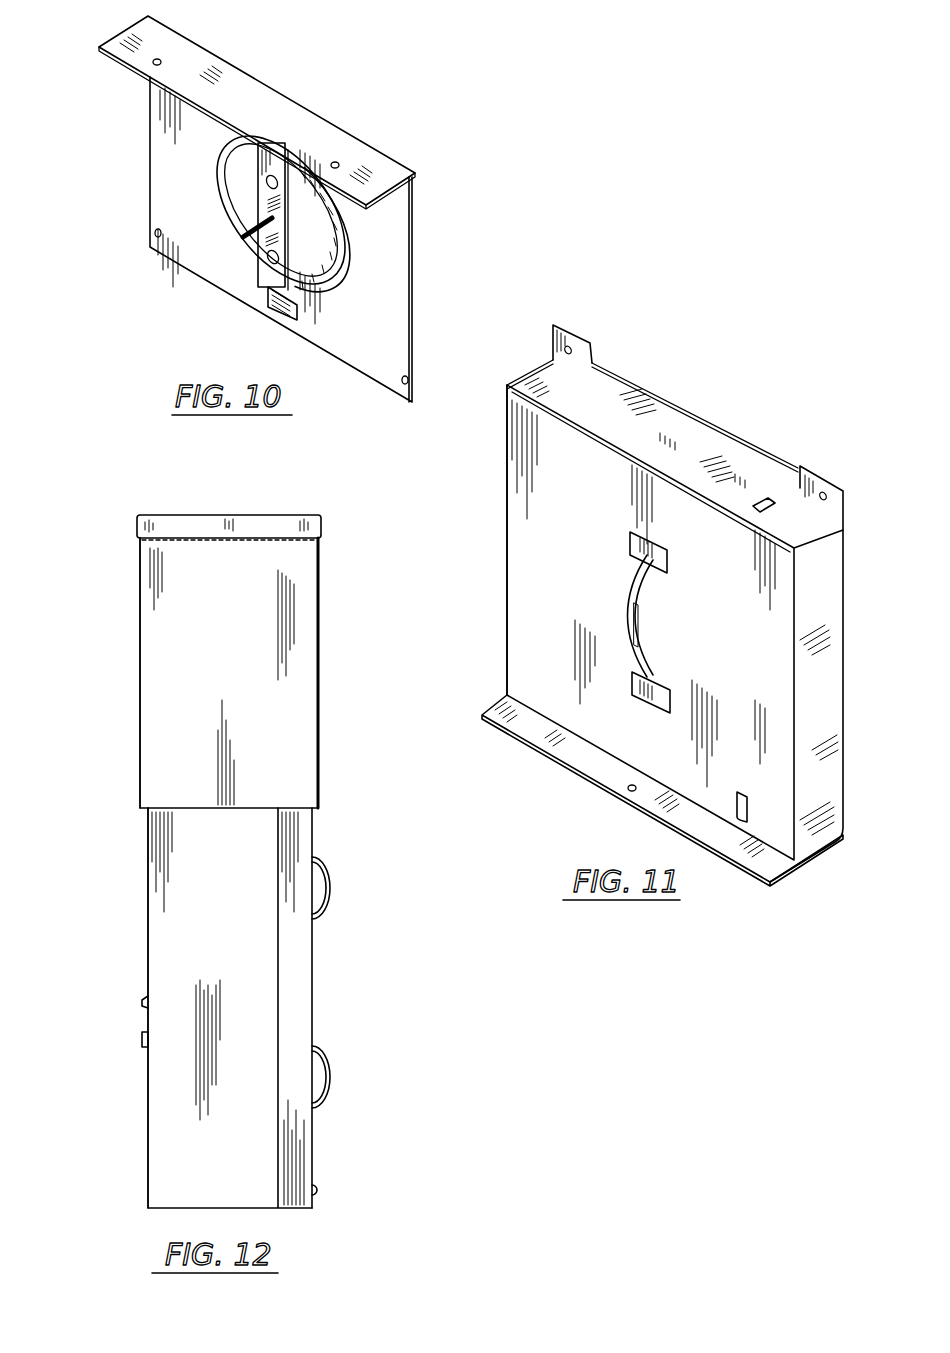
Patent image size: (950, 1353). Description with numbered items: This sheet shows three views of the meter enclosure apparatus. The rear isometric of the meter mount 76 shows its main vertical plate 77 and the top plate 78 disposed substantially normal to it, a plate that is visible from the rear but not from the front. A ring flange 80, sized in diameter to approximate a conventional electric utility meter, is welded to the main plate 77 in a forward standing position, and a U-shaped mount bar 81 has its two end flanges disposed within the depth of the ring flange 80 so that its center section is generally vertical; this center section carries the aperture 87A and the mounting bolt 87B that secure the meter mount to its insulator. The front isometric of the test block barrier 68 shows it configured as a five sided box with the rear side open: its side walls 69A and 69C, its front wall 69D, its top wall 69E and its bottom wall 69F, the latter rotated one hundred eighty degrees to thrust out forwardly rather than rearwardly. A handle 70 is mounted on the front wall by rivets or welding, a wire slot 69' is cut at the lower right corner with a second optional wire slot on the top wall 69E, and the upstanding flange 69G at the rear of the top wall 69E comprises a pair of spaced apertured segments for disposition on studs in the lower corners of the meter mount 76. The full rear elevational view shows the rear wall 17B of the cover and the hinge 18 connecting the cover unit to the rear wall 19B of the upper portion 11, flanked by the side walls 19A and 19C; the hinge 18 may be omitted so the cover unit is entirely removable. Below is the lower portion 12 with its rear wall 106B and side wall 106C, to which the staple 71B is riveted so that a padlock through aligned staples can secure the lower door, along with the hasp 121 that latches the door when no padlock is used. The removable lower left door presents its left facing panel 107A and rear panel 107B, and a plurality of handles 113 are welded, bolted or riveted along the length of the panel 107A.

In FIG. 12, the upper portion 11 is at (337, 791).
In FIG. 12, the lower enclosure 12 is at (364, 1048).
In FIG. 12, the rear wall of cover 17B is at (205, 525).
In FIG. 12, the hinge 18 is at (280, 542).
In FIG. 12, the side wall 19A is at (321, 671).
In FIG. 12, the rear wall of upper portion 19B is at (255, 688).
In FIG. 12, the side wall 19C is at (138, 680).
In FIG. 11, the test block barrier 68 is at (730, 353).
In FIG. 11, the side wall of test block barrier 69A is at (507, 504).
In FIG. 11, the side wall of test block barrier 69C is at (817, 662).
In FIG. 11, the front wall of test block barrier 69D is at (740, 635).
In FIG. 11, the top wall of test block barrier 69E is at (678, 447).
In FIG. 11, the bottom wall of test block barrier 69F is at (567, 748).
In FIG. 11, the upstanding flange 69G is at (618, 390).
In FIG. 11, the wire slot 69' is at (813, 619).
In FIG. 11, the handle 70 is at (625, 602).
In FIG. 12, the staple 71B is at (142, 1043).
In FIG. 10, the meter mount 76 is at (384, 339).
In FIG. 10, the main plate 77 is at (196, 227).
In FIG. 10, the top plate 78 is at (262, 113).
In FIG. 10, the ring flange 80 is at (232, 180).
In FIG. 10, the mount bar 81 is at (272, 292).
In FIG. 10, the aperture 87A is at (275, 219).
In FIG. 10, the bolt 87B is at (262, 258).
In FIG. 12, the rear wall of lower portion 106B is at (230, 1008).
In FIG. 12, the side wall 106C is at (148, 1100).
In FIG. 12, the left facing panel 107A is at (314, 977).
In FIG. 12, the rear panel 107B is at (300, 1002).
In FIG. 12, the handle 113 is at (329, 895).
In FIG. 12, the hasp 121 is at (145, 995).